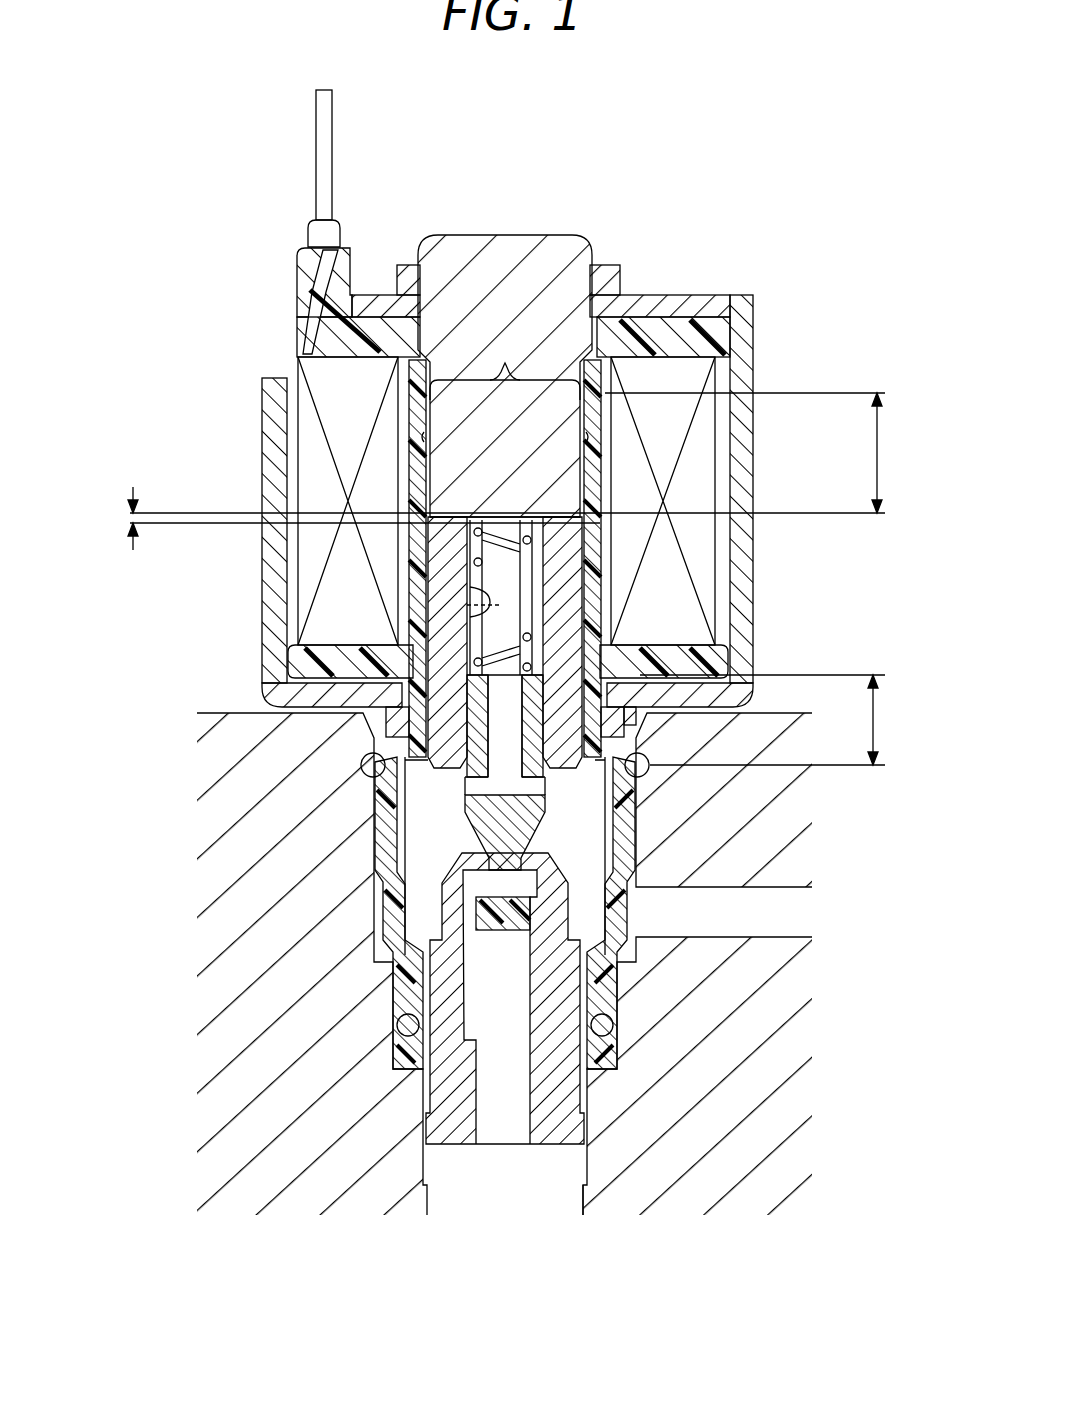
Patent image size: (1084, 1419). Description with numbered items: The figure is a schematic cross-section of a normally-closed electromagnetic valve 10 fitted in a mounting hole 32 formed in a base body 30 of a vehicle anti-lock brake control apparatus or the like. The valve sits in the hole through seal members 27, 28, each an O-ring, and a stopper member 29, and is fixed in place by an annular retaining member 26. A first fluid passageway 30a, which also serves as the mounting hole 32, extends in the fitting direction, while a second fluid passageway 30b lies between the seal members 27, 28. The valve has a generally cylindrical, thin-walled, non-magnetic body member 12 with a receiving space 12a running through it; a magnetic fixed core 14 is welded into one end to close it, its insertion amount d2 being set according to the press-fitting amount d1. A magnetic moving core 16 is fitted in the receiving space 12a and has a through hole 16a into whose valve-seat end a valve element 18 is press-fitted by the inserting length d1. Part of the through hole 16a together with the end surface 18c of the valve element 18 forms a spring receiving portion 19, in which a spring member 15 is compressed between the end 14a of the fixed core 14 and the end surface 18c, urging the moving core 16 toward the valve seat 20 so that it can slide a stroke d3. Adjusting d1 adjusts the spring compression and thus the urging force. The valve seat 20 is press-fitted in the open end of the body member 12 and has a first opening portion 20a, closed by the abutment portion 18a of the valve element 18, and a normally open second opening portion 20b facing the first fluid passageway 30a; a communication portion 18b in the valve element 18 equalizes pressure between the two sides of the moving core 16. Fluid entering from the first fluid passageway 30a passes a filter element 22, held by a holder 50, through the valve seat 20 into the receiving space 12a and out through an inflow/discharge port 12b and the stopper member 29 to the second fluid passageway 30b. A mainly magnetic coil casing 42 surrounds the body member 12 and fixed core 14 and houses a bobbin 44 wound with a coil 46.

The normally-closed electromagnetic valve 10 is at (757, 172).
The body member 12 is at (415, 594).
The receiving space 12a is at (505, 388).
The inflow/discharge port 12b is at (592, 905).
The fixed core 14 is at (533, 413).
The end of the fixed core 14a is at (503, 522).
The spring member 15 is at (545, 577).
The moving core 16 is at (502, 605).
The through hole 16a is at (440, 624).
The valve element 18 is at (365, 745).
The abutment portion 18a is at (472, 840).
The communication portion 18b is at (485, 788).
The end surface of the valve element 18c is at (630, 655).
The spring receiving portion 19 is at (530, 580).
The valve seat 20 is at (568, 1080).
The first opening portion 20a is at (497, 890).
The second opening portion 20b is at (503, 1113).
The filter element 22 is at (492, 1022).
The annular retaining member 26 is at (360, 766).
The seal member 27 is at (649, 823).
The seal member 28 is at (597, 1024).
The stopper member 29 is at (640, 985).
The base body 30 is at (272, 1012).
The first fluid passageway 30a is at (581, 1196).
The second fluid passageway 30b is at (772, 893).
The mounting hole 32 is at (388, 718).
The coil casing 42 is at (268, 395).
The bobbin 44 is at (300, 664).
The coil 46 is at (316, 497).
The holder 50 is at (556, 1145).
The amount of press-fitting d1 is at (775, 720).
The amount of insertion of the fixed core d2 is at (521, 453).
The stroke d3 is at (346, 518).